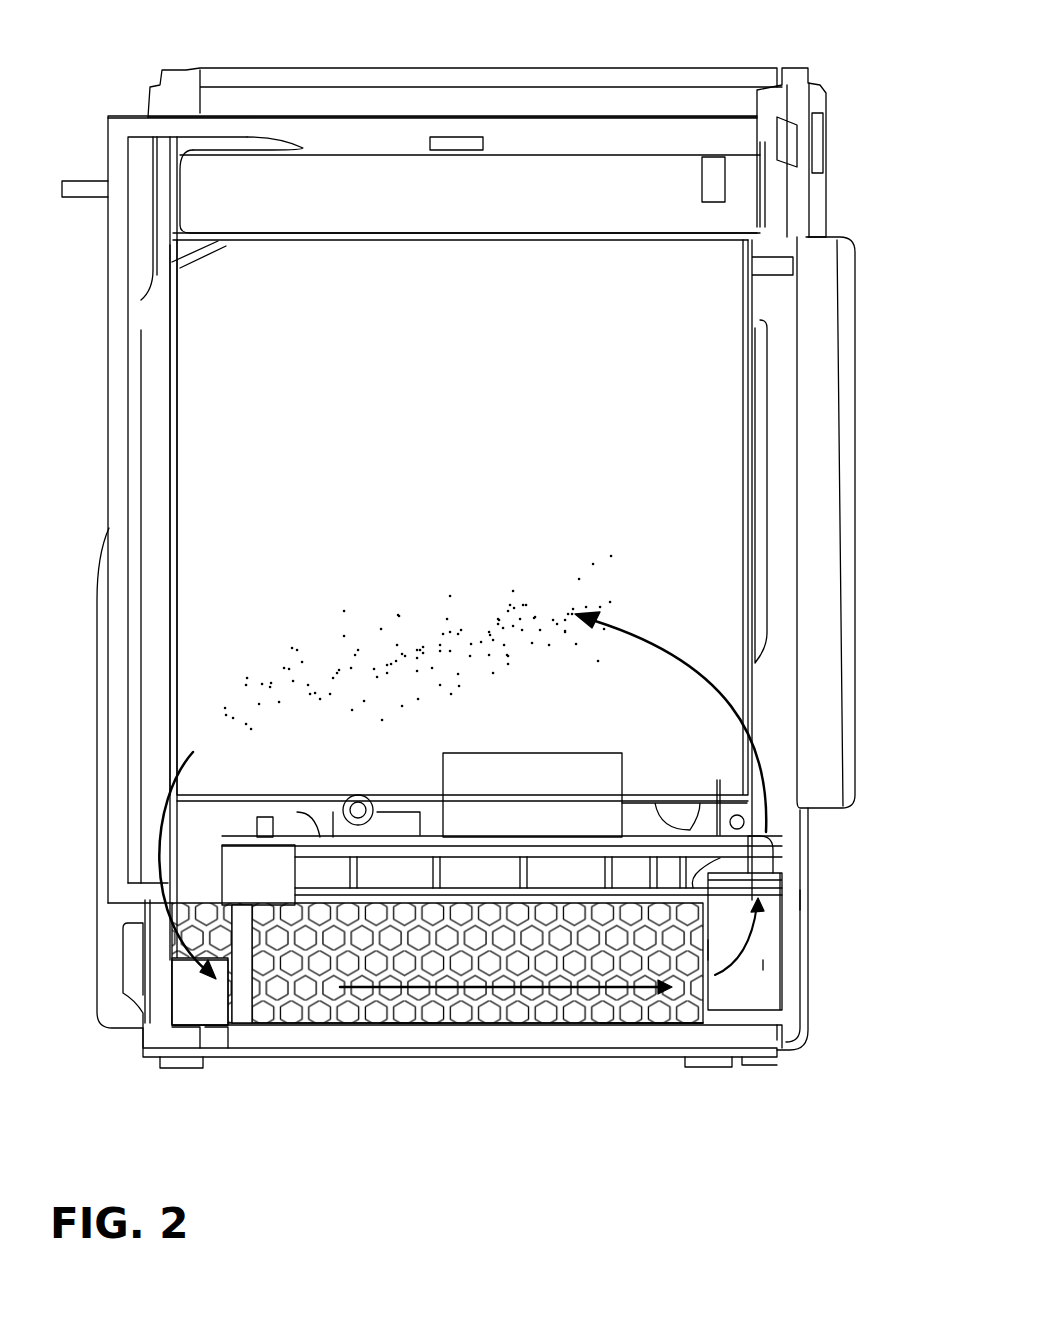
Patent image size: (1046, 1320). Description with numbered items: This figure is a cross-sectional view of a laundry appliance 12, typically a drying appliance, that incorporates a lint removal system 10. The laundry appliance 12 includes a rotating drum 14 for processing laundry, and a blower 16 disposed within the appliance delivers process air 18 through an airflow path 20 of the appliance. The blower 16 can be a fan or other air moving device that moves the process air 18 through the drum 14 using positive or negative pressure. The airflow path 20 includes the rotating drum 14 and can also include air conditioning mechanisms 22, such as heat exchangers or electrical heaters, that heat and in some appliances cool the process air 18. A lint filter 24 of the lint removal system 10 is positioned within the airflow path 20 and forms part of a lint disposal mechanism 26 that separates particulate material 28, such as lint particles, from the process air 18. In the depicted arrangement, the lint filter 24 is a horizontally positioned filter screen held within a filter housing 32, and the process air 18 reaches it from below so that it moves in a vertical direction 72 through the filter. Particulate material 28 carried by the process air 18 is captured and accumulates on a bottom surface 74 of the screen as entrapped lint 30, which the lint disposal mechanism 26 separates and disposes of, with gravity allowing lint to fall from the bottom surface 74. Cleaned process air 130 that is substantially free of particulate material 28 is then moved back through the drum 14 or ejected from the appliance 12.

The lint removal system 10 is at (808, 934).
The laundry appliance 12 is at (338, 58).
The rotating drum 14 is at (640, 397).
The blower 16 is at (173, 1017).
The process air 18 is at (500, 997).
The airflow path 20 is at (668, 1022).
The air conditioning mechanisms 22 is at (401, 1013).
The lint filter 24 is at (767, 870).
The lint disposal mechanism 26 is at (783, 1030).
The particulate material 28 is at (763, 965).
The entrapped lint 30 is at (695, 870).
The filter housing 32 is at (783, 990).
The vertical direction 72 is at (762, 941).
The bottom surface 74 is at (807, 900).
The cleaned process air 130 is at (653, 642).